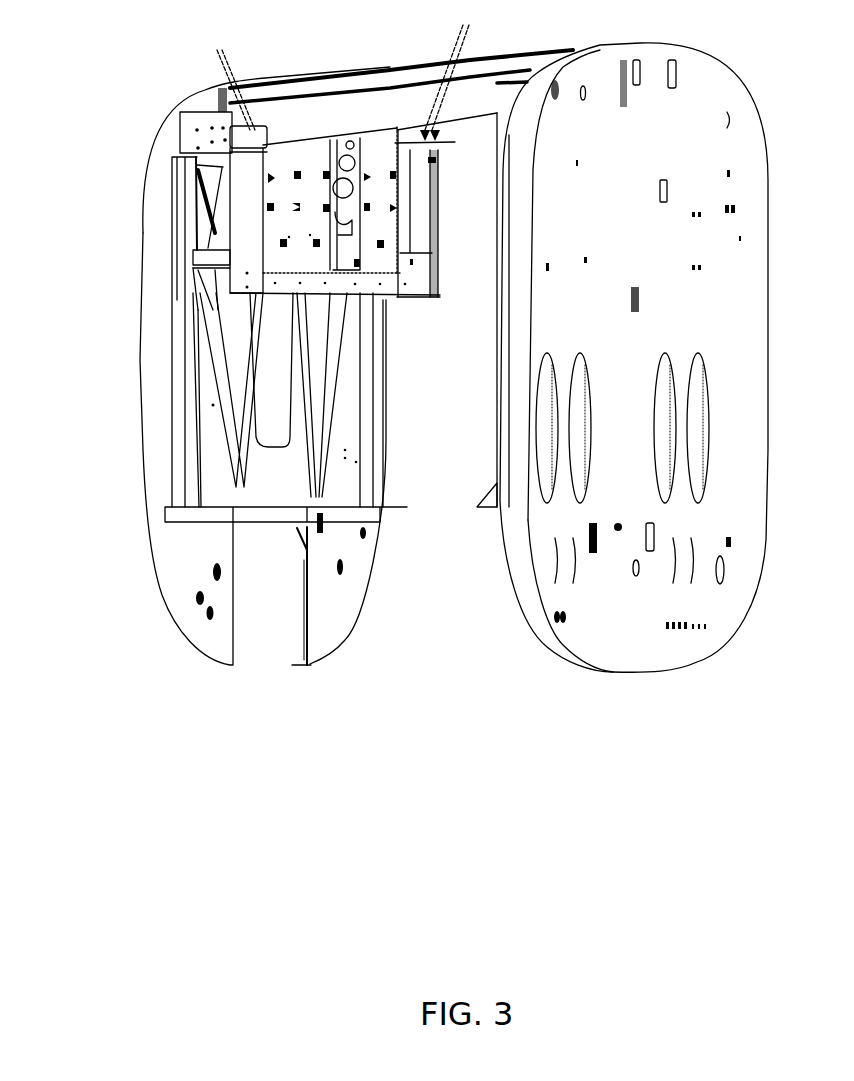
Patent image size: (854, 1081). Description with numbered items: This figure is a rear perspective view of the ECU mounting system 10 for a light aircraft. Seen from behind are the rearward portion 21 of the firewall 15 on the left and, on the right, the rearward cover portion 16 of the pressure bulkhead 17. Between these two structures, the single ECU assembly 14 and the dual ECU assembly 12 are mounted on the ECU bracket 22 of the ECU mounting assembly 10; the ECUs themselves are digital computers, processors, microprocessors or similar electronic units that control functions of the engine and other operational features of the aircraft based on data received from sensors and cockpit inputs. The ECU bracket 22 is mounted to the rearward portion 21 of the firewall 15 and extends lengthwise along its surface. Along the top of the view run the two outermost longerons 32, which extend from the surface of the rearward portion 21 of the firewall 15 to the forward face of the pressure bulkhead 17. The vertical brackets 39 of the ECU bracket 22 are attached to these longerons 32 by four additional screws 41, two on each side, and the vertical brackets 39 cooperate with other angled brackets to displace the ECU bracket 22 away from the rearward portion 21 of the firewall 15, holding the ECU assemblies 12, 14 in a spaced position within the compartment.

The ECU mounting system 10 is at (330, 714).
The dual ECU assembly 12 is at (262, 255).
The single ECU assembly 14 is at (388, 265).
The firewall 15 is at (146, 663).
The rearward cover portion 16 is at (742, 487).
The pressure bulkhead 17 is at (683, 688).
The rearward portion 21 is at (330, 627).
The ECU bracket 22 is at (280, 283).
The longerons 32 is at (315, 110).
The vertical brackets 39 is at (243, 183).
The screws 41 is at (217, 50).